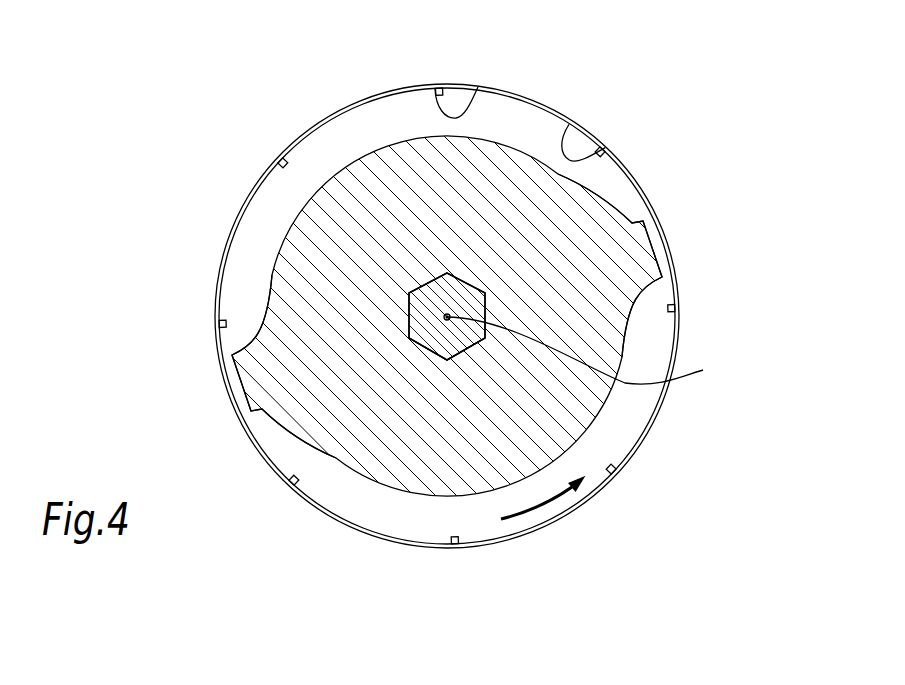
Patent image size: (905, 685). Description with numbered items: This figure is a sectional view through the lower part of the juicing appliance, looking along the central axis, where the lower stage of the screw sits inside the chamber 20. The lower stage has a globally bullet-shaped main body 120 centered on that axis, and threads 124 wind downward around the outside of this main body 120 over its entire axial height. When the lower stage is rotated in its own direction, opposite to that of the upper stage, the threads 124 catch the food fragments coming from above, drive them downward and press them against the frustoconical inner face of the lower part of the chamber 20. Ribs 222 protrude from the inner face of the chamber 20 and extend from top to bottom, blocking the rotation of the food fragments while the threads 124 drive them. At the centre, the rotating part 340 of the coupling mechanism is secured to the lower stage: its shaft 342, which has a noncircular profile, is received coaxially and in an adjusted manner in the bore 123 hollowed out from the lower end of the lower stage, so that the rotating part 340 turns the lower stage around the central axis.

The chamber 20 is at (313, 510).
The ribs 222 is at (478, 87).
The main body 120 is at (302, 292).
The threads 124 is at (640, 230).
The rotating part 340 is at (487, 300).
The shaft 342 is at (468, 335).
The bore 123 is at (434, 338).